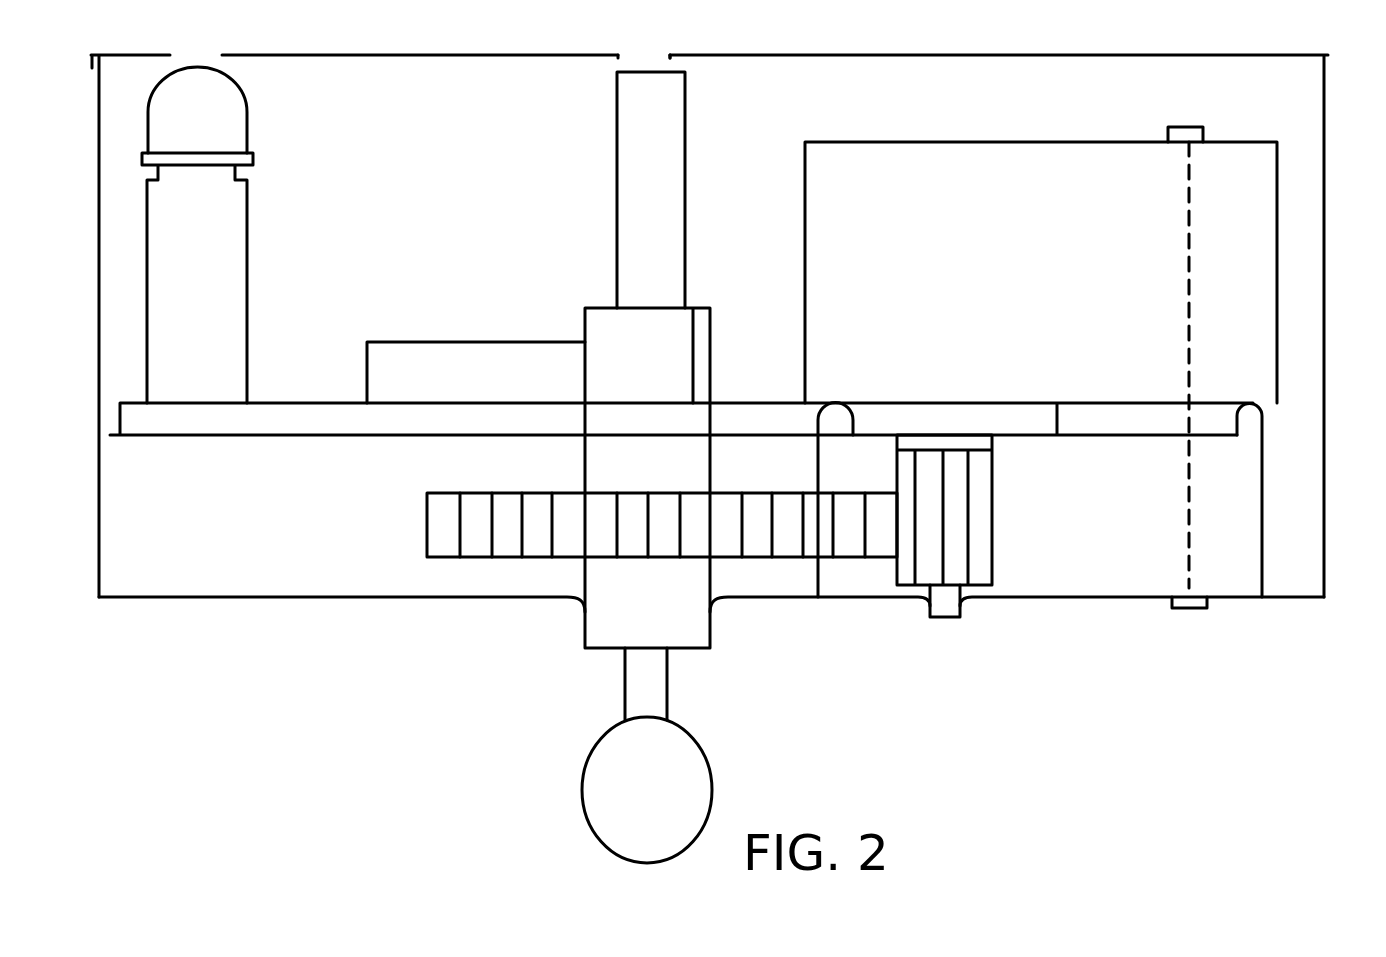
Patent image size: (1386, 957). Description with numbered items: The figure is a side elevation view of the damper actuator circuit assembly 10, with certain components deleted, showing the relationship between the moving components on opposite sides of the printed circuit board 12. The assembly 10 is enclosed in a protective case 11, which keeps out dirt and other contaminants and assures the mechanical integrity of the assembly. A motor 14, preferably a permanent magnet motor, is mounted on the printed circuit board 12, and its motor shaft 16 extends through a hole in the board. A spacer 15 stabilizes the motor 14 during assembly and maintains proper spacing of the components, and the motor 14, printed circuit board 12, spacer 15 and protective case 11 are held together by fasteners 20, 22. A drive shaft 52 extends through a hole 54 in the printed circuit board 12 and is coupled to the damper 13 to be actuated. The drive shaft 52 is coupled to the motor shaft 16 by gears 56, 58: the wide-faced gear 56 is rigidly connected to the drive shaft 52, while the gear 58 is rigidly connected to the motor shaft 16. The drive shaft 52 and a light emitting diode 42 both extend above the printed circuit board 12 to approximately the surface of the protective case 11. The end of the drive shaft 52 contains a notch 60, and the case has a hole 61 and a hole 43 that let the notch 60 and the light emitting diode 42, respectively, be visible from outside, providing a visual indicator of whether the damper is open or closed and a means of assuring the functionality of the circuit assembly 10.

The circuit assembly 10 is at (390, 280).
The protective case 11 is at (1326, 578).
The printed circuit board 12 is at (310, 399).
The damper 13 is at (712, 782).
The motor 14 is at (793, 218).
The spacer 15 is at (1264, 505).
The motor shaft 16 is at (925, 617).
The fastener 20 is at (1226, 342).
The fastener 22 is at (1185, 357).
The light emitting diode 42 is at (224, 212).
The hole 43 is at (197, 65).
The drive shaft 52 is at (690, 128).
The hole 54 is at (695, 422).
The gear 56 is at (489, 490).
The gear 58 is at (999, 507).
The notch 60 is at (620, 43).
The hole 61 is at (656, 52).